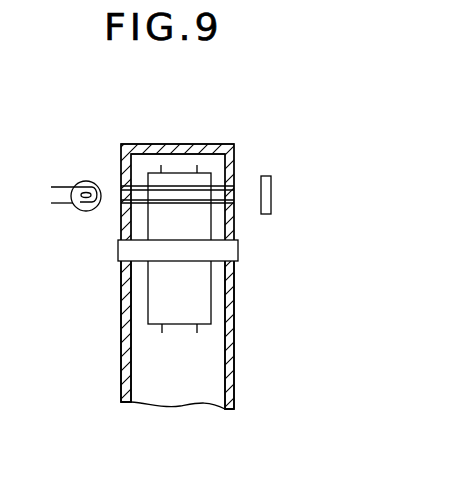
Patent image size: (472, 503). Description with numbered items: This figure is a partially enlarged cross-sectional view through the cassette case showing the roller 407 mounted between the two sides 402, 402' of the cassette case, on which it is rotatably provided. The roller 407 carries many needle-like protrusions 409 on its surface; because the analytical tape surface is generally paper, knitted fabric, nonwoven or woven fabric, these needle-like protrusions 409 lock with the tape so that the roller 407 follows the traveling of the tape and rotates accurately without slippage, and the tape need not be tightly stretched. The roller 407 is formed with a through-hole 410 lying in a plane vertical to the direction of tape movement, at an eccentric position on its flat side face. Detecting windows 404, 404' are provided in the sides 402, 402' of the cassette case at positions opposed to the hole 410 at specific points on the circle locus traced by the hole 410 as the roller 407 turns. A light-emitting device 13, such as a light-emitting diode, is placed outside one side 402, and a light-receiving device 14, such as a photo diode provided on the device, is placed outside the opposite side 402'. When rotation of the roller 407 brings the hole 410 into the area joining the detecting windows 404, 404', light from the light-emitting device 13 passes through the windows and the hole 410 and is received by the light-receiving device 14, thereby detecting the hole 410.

The light-emitting device 13 is at (78, 203).
The light-receiving device 14 is at (264, 188).
The side of the cassette case 402 is at (91, 331).
The side of the cassette case 402' is at (267, 335).
The detecting window 404 is at (105, 167).
The detecting window 404' is at (252, 163).
The roller 407 is at (201, 286).
The needle-like protrusions 409 is at (153, 323).
The through-hole 410 is at (199, 186).